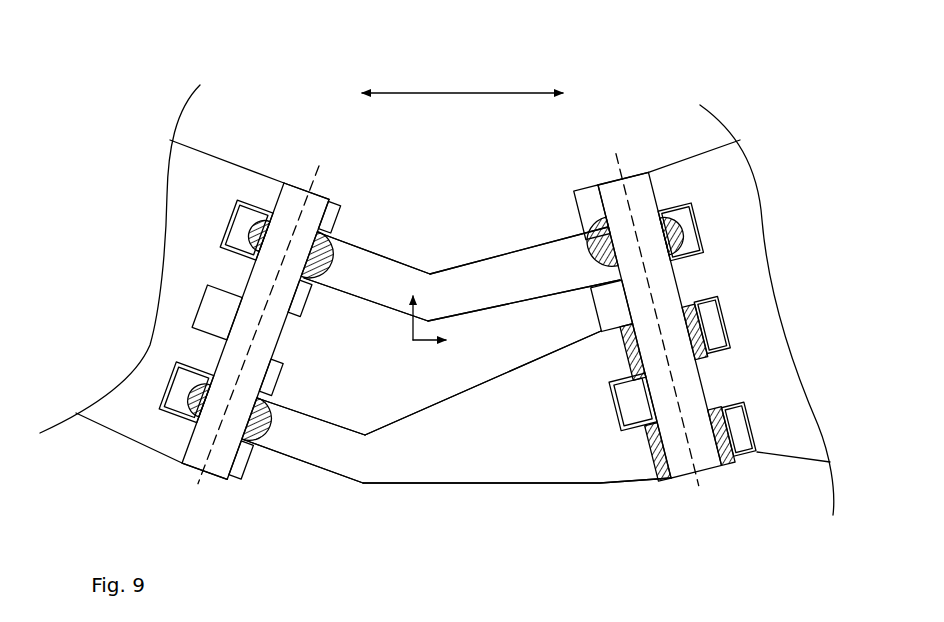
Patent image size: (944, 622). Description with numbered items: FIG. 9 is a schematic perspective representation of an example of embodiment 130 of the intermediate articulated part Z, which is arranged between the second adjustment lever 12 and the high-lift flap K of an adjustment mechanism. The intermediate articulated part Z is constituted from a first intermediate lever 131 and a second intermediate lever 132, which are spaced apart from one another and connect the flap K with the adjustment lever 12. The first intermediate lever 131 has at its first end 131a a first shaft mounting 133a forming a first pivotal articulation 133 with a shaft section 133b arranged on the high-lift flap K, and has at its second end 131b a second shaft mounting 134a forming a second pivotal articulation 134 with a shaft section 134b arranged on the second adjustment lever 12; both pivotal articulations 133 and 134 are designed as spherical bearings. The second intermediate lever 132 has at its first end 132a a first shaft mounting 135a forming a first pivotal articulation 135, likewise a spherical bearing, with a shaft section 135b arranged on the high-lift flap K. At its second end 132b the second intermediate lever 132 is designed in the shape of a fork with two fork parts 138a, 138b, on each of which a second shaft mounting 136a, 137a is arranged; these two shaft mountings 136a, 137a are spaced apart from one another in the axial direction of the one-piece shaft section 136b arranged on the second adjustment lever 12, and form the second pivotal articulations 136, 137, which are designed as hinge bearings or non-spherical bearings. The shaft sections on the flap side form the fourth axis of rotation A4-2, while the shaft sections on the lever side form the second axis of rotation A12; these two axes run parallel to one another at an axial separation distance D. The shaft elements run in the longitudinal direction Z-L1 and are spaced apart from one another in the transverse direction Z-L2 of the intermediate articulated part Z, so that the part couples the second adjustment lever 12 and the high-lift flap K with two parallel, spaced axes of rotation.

The high-lift flap K is at (170, 247).
The second adjustment lever 12 is at (742, 231).
The intermediate articulated part 130 is at (456, 392).
The first intermediate lever 131 is at (462, 263).
The first end of first intermediate lever 131a is at (355, 268).
The second end of first intermediate lever 131b is at (538, 258).
The second intermediate lever 132 is at (456, 440).
The first end of second intermediate lever 132a is at (273, 445).
The second end of second intermediate lever 132b is at (603, 474).
The first pivotal articulation 133 is at (214, 337).
The first shaft mounting 133a is at (246, 230).
The shaft section 133b is at (306, 191).
The second pivotal articulation 134 is at (659, 349).
The second shaft mounting 134a is at (680, 232).
The shaft section 134b is at (623, 178).
The first pivotal articulation 135 is at (260, 422).
The first shaft mounting 135a is at (186, 392).
The shaft section 135b is at (204, 471).
The second pivotal articulation 136 is at (676, 338).
The second shaft mounting 136a is at (712, 324).
The shaft section 136b is at (658, 452).
The second pivotal articulation 137 is at (733, 433).
The second shaft mounting 137a is at (721, 436).
The fork part 138a is at (712, 325).
The fork part 138b is at (738, 429).
The second axis of rotation A12 is at (657, 320).
The fourth axis of rotation A4-2 is at (258, 324).
The intermediate articulated part Z is at (633, 77).
The longitudinal direction Z-L1 is at (413, 315).
The transverse direction Z-L2 is at (421, 341).
The axial separation distance D is at (462, 79).